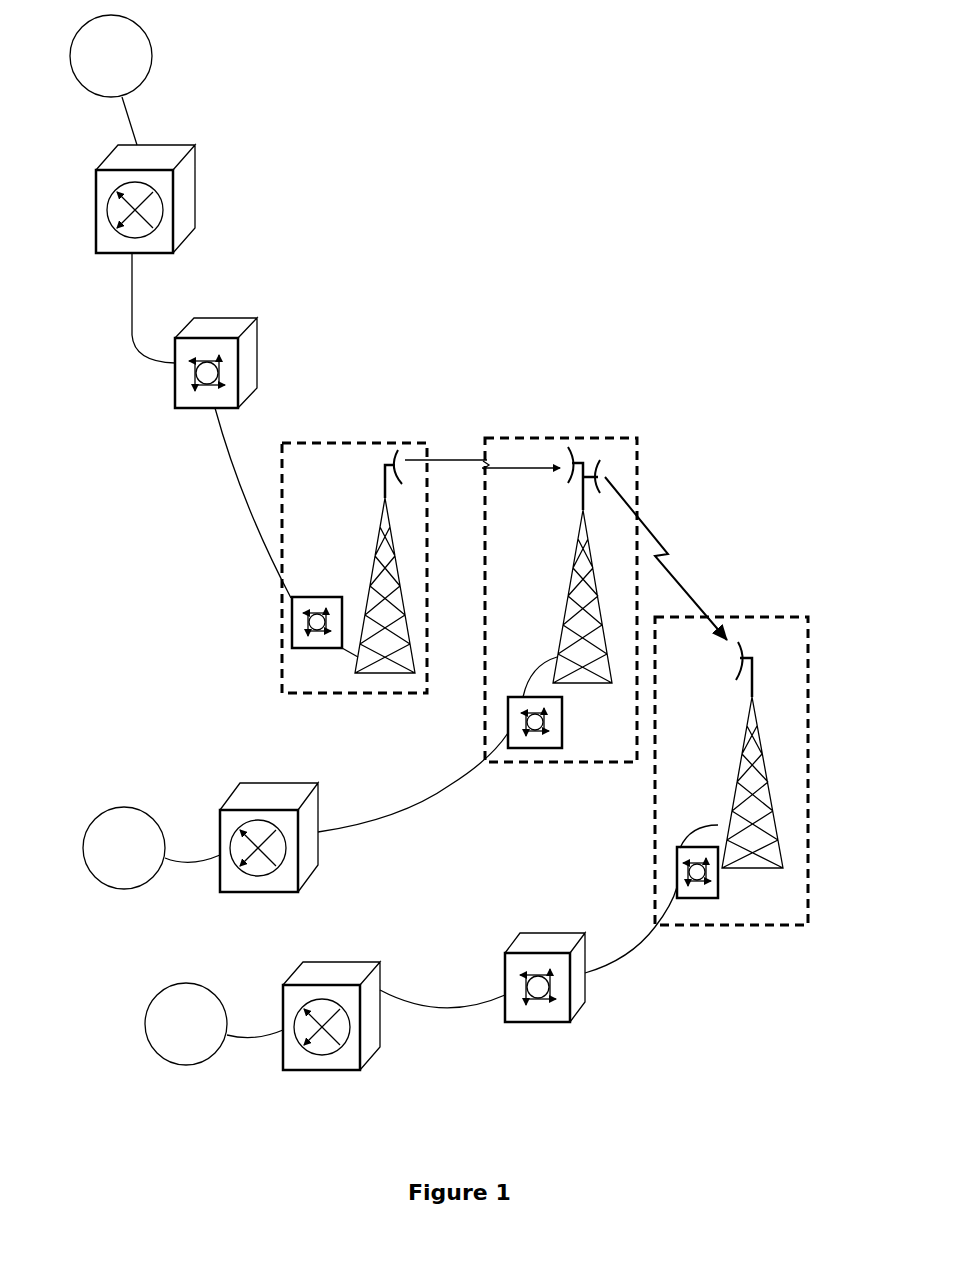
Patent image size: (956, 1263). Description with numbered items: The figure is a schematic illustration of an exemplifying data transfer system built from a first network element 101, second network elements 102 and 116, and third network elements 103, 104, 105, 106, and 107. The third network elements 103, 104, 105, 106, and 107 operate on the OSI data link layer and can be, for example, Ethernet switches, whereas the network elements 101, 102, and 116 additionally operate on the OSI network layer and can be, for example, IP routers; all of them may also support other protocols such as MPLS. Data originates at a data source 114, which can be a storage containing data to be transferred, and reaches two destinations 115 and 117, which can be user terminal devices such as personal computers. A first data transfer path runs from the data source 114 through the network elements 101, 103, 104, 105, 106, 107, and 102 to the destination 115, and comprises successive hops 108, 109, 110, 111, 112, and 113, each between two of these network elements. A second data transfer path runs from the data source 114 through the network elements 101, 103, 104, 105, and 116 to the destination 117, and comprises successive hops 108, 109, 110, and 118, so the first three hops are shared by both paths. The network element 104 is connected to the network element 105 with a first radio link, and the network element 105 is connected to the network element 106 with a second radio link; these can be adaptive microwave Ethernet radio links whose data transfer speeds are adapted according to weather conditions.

The first network element 101 is at (196, 161).
The second network element 102 is at (382, 980).
The third network element 103 is at (257, 338).
The third network element 104 is at (347, 697).
The third network element 105 is at (538, 762).
The third network element 106 is at (753, 927).
The third network element 107 is at (507, 968).
The hop 108 is at (162, 387).
The hop 109 is at (333, 678).
The hop 110 is at (577, 428).
The hop 111 is at (748, 637).
The hop 112 is at (568, 918).
The hop 113 is at (520, 1033).
The data source 114 is at (131, 66).
The destination 115 is at (204, 1036).
The second network element 116 is at (320, 803).
The destination 117 is at (141, 860).
The hop 118 is at (558, 802).